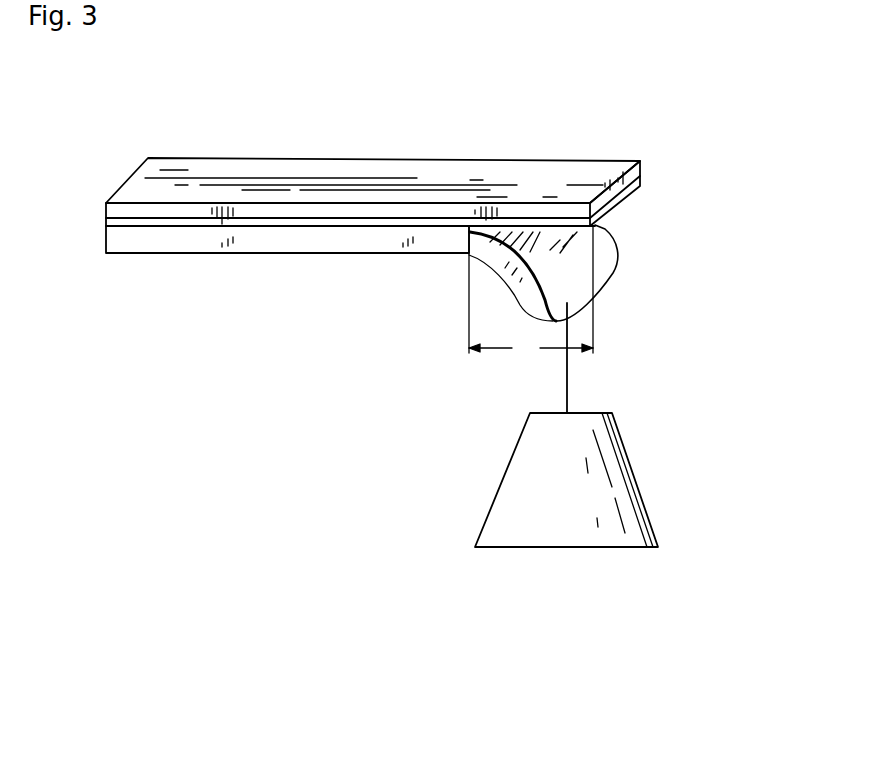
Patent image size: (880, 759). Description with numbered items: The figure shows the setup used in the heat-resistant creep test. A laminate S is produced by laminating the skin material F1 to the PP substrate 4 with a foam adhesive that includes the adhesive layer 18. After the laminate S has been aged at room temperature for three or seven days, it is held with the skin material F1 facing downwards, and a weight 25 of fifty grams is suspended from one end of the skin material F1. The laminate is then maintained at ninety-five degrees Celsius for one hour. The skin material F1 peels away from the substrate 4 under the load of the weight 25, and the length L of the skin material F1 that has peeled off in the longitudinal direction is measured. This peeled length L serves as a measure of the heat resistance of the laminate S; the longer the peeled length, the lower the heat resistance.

The laminate S is at (444, 153).
The PP substrate 4 is at (567, 177).
The adhesive layer 18 is at (642, 180).
The skin material F1 is at (583, 267).
The peeled length L is at (531, 297).
The weight 25 is at (631, 497).